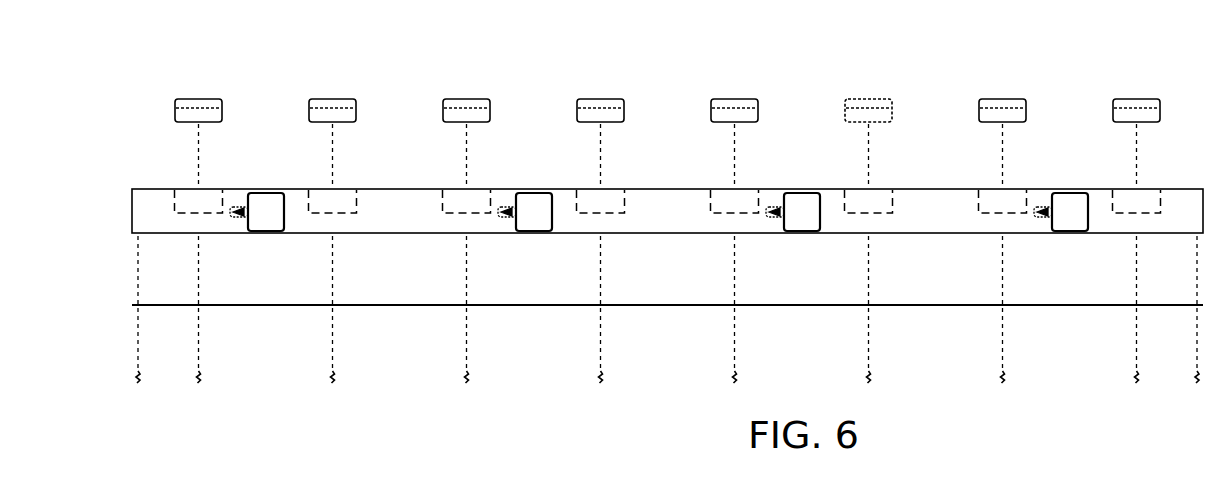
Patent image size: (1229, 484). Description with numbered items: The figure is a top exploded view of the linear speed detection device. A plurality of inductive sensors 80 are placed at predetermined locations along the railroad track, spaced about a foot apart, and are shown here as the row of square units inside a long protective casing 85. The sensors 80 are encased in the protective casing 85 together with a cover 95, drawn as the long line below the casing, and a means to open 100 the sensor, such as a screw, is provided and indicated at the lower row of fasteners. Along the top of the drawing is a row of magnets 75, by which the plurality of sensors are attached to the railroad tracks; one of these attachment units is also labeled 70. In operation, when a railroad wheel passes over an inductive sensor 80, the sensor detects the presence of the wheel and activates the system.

The marker 70 is at (1140, 102).
The magnet 75 is at (200, 100).
The inductive sensor 80 is at (531, 200).
The protective casing 85 is at (931, 194).
The cover 95 is at (651, 308).
The means to open 100 is at (467, 374).